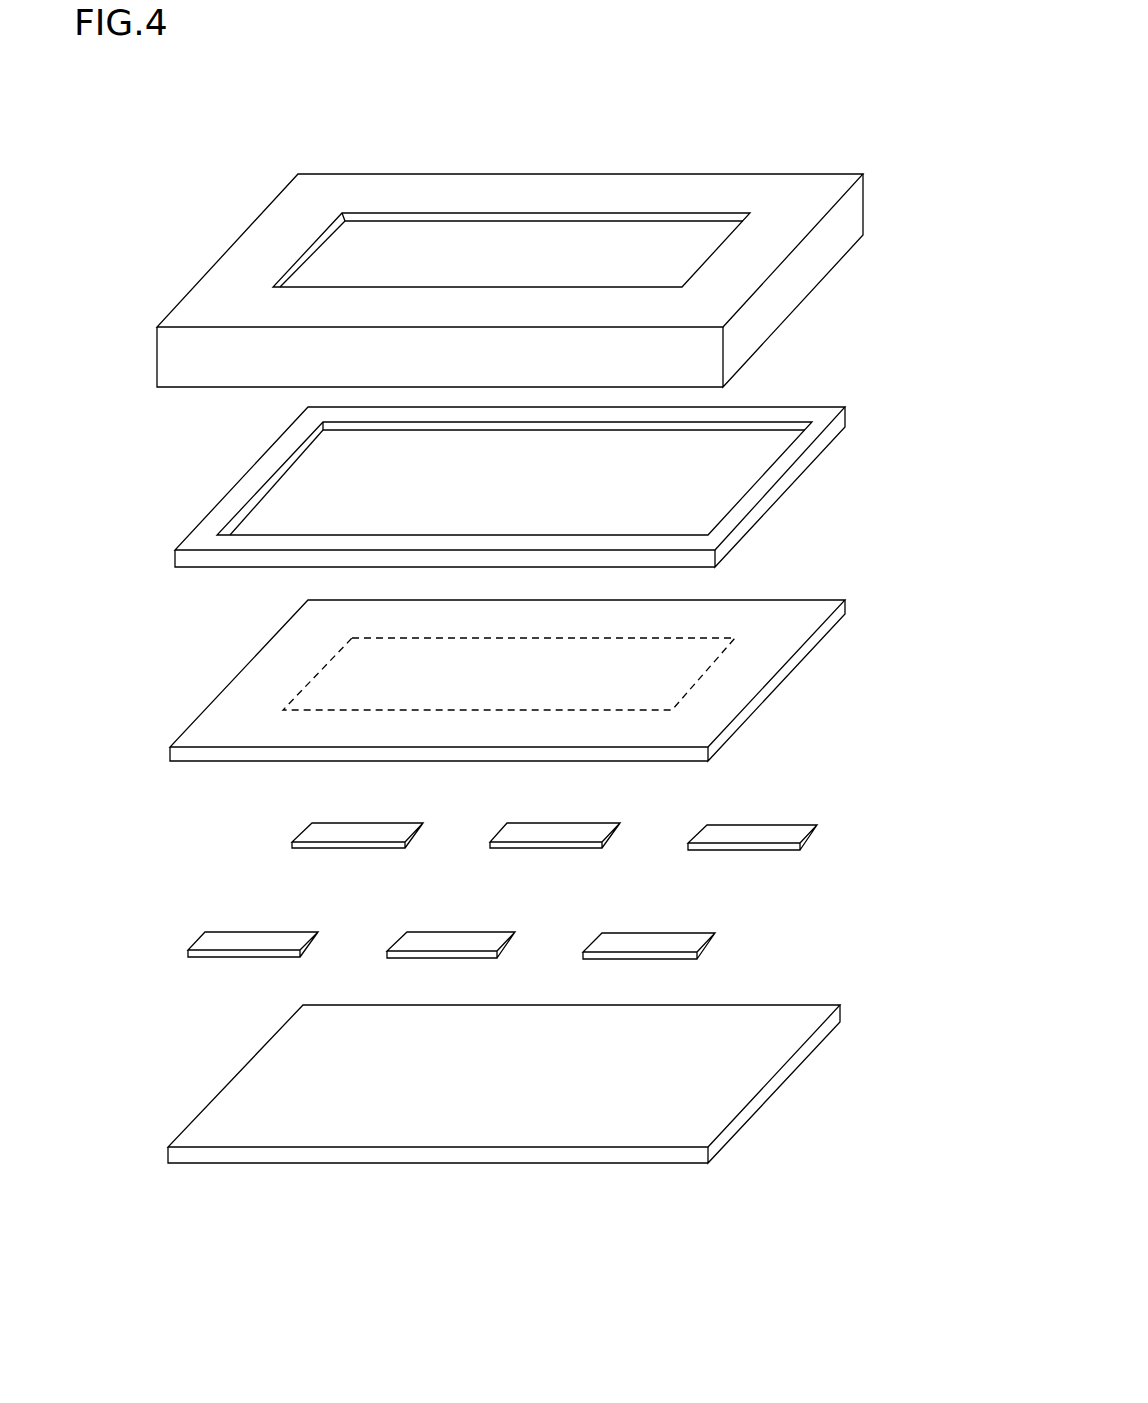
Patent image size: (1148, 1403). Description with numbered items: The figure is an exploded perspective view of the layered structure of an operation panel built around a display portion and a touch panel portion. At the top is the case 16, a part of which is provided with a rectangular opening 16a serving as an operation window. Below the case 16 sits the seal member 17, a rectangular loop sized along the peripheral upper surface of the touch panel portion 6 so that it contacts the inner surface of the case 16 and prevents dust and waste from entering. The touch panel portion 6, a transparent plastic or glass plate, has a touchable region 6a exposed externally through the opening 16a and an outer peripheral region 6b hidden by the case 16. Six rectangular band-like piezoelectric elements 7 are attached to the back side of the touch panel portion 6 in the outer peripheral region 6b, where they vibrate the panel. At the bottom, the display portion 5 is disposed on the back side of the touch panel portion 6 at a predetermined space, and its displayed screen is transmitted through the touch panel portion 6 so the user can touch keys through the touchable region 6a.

The case 16 is at (510, 223).
The opening 16a is at (480, 248).
The seal member 17 is at (771, 488).
The touch panel portion 6 is at (484, 670).
The touchable region 6a is at (388, 678).
The outer peripheral region 6b is at (256, 698).
The piezoelectric elements 7 is at (417, 836).
The display portion 5 is at (777, 1088).